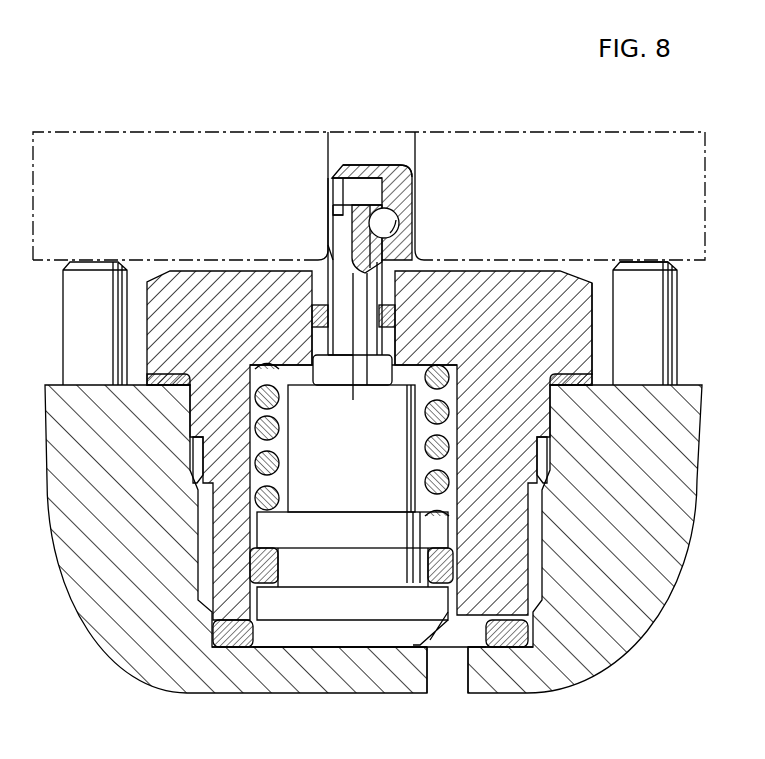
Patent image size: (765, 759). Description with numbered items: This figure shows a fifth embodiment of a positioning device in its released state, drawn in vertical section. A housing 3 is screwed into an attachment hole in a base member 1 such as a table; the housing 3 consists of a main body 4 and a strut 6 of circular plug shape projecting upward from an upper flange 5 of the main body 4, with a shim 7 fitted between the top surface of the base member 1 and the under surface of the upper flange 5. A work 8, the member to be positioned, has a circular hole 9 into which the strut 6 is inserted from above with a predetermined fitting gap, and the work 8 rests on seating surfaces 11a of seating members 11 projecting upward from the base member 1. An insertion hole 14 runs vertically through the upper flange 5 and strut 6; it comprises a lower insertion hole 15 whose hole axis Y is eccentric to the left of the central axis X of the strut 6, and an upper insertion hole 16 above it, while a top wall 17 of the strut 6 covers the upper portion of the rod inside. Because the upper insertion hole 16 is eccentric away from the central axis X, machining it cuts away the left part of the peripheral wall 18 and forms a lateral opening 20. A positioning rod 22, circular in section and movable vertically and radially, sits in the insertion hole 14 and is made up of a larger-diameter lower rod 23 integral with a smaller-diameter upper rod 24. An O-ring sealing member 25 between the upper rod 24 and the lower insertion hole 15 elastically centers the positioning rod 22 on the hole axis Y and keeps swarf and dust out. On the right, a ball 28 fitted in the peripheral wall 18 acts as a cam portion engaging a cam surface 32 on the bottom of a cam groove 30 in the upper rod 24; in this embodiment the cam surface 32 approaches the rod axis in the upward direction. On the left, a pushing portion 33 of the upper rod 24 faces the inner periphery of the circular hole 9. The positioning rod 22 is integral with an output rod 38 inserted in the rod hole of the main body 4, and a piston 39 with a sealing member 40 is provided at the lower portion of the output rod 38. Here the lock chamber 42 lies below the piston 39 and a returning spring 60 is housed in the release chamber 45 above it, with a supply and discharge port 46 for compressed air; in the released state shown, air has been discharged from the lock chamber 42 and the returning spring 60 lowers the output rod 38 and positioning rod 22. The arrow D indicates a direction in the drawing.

The base member 1 is at (660, 592).
The housing 3 is at (603, 344).
The main body 4 is at (485, 655).
The upper flange 5 is at (593, 305).
The strut 6 is at (422, 209).
The shim 7 is at (600, 380).
The work 8 is at (135, 132).
The circular hole 9 is at (330, 160).
The seating members 11 is at (678, 320).
The seating surfaces 11a is at (645, 262).
The insertion hole 14 is at (313, 366).
The lower insertion hole 15 is at (318, 322).
The upper insertion hole 16 is at (328, 254).
The top wall 17 is at (330, 175).
The peripheral wall 18 is at (401, 229).
The opening 20 is at (330, 190).
The positioning rod 22 is at (320, 239).
The lower rod 23 is at (344, 385).
The upper rod 24 is at (335, 210).
The sealing member 25 is at (322, 316).
The ball 28 is at (408, 196).
The cam groove 30 is at (346, 255).
The cam surface 32 is at (382, 176).
The pushing portion 33 is at (328, 225).
The output rod 38 is at (329, 662).
The piston 39 is at (348, 538).
The sealing member 40 is at (279, 565).
The lock chamber 42 is at (262, 642).
The release chamber 45 is at (285, 448).
The supply and discharge port 46 is at (443, 688).
The returning spring 60 is at (280, 470).
The central axis X is at (371, 197).
The hole axis Y is at (355, 398).
The direction D is at (369, 664).